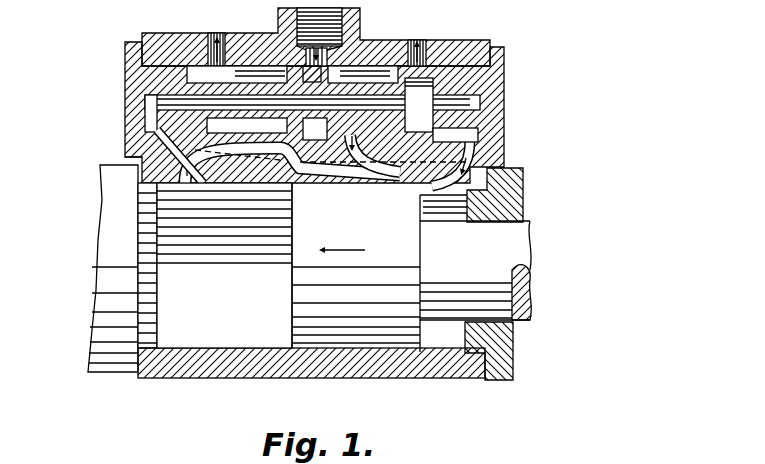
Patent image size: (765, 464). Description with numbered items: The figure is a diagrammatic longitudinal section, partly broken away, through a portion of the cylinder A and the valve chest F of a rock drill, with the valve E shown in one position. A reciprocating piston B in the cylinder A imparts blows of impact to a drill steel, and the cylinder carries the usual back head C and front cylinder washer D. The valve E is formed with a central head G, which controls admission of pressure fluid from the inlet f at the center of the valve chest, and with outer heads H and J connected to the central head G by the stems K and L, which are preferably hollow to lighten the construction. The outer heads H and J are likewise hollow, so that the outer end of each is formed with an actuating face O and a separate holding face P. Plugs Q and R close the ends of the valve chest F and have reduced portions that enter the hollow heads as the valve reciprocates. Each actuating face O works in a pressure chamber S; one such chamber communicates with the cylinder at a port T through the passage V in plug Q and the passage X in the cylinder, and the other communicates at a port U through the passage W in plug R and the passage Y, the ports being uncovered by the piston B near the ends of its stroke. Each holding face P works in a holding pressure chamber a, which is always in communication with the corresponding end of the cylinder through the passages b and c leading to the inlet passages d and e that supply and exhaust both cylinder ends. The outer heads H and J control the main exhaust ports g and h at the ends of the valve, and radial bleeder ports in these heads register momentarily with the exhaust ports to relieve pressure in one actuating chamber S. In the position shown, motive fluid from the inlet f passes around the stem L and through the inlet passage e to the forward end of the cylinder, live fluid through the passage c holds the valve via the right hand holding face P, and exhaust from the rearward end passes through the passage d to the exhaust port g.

The outer head H is at (176, 56).
The actuating face O is at (186, 68).
The gland k is at (210, 70).
The main exhaust port g is at (224, 75).
The stem K is at (220, 32).
The valve E is at (284, 72).
The central head G is at (290, 38).
The inlet f is at (356, 92).
The stem L is at (378, 68).
The valve chest F is at (411, 36).
The main exhaust port h is at (440, 80).
The back head C is at (112, 365).
The outer head J is at (494, 50).
The holding face P is at (142, 62).
The holding pressure chamber a is at (125, 70).
The pressure chamber S is at (150, 112).
The plug Q is at (138, 106).
The passage W is at (142, 130).
The passage b is at (166, 178).
The plug R is at (500, 124).
The passage V is at (505, 142).
The passage c is at (505, 195).
The port U is at (362, 178).
The inlet passage e is at (416, 175).
The passage X is at (426, 200).
The passage Y is at (182, 188).
The port T is at (274, 188).
The inlet passage d is at (225, 190).
The piston B is at (286, 350).
The cylinder A is at (416, 372).
The front cylinder washer D is at (498, 352).